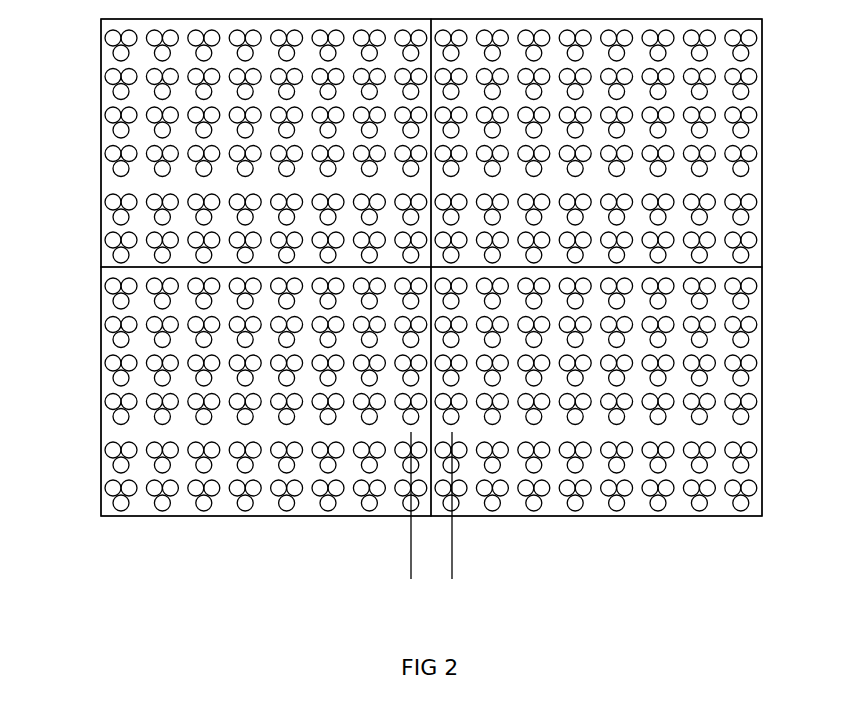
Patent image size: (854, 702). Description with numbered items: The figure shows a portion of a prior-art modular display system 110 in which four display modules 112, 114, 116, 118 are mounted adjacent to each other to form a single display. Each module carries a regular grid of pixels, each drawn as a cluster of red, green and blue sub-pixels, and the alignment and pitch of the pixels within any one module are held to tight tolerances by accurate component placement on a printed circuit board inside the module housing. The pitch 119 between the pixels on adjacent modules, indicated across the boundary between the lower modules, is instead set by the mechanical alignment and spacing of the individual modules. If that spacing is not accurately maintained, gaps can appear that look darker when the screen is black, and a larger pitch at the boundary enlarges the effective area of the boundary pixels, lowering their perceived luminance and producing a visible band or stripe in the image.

The modular display system 110 is at (137, 522).
The display module 112 is at (125, 435).
The display module 114 is at (101, 190).
The display module 116 is at (762, 185).
The display module 118 is at (762, 432).
The pitch 119 is at (308, 559).